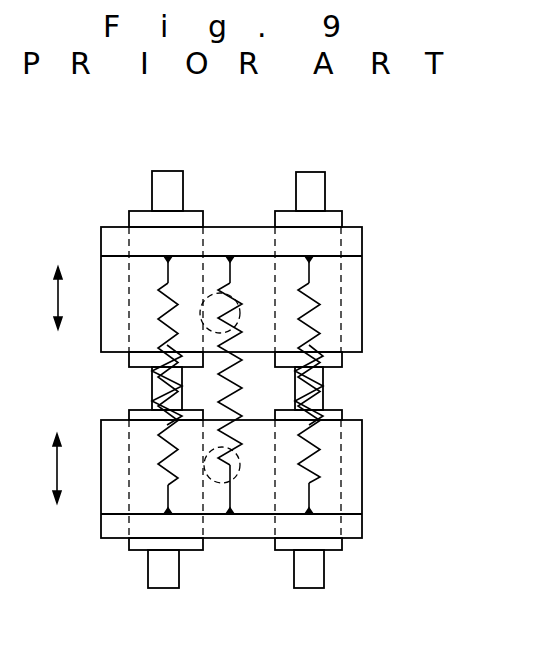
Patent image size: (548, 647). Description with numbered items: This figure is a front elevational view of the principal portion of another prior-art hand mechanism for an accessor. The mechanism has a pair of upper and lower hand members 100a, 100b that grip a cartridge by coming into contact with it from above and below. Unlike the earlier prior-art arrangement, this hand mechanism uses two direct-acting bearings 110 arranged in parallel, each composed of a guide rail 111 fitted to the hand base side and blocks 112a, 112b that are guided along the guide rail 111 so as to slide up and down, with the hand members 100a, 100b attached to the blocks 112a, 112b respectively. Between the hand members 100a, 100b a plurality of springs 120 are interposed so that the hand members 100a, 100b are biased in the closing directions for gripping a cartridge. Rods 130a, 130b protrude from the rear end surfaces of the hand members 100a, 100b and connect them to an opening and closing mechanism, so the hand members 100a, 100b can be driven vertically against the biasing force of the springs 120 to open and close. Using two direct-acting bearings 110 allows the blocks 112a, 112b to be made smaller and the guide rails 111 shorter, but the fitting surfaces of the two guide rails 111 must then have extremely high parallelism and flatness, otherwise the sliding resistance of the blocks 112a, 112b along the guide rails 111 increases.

The upper hand member 100a is at (360, 241).
The lower hand member 100b is at (350, 535).
The direct-acting bearing 110 is at (118, 206).
The guide rail 111 is at (166, 180).
The upper block 112a is at (190, 211).
The lower block 112b is at (140, 552).
The spring 120 is at (152, 376).
The rod 130a is at (223, 293).
The rod 130b is at (220, 483).